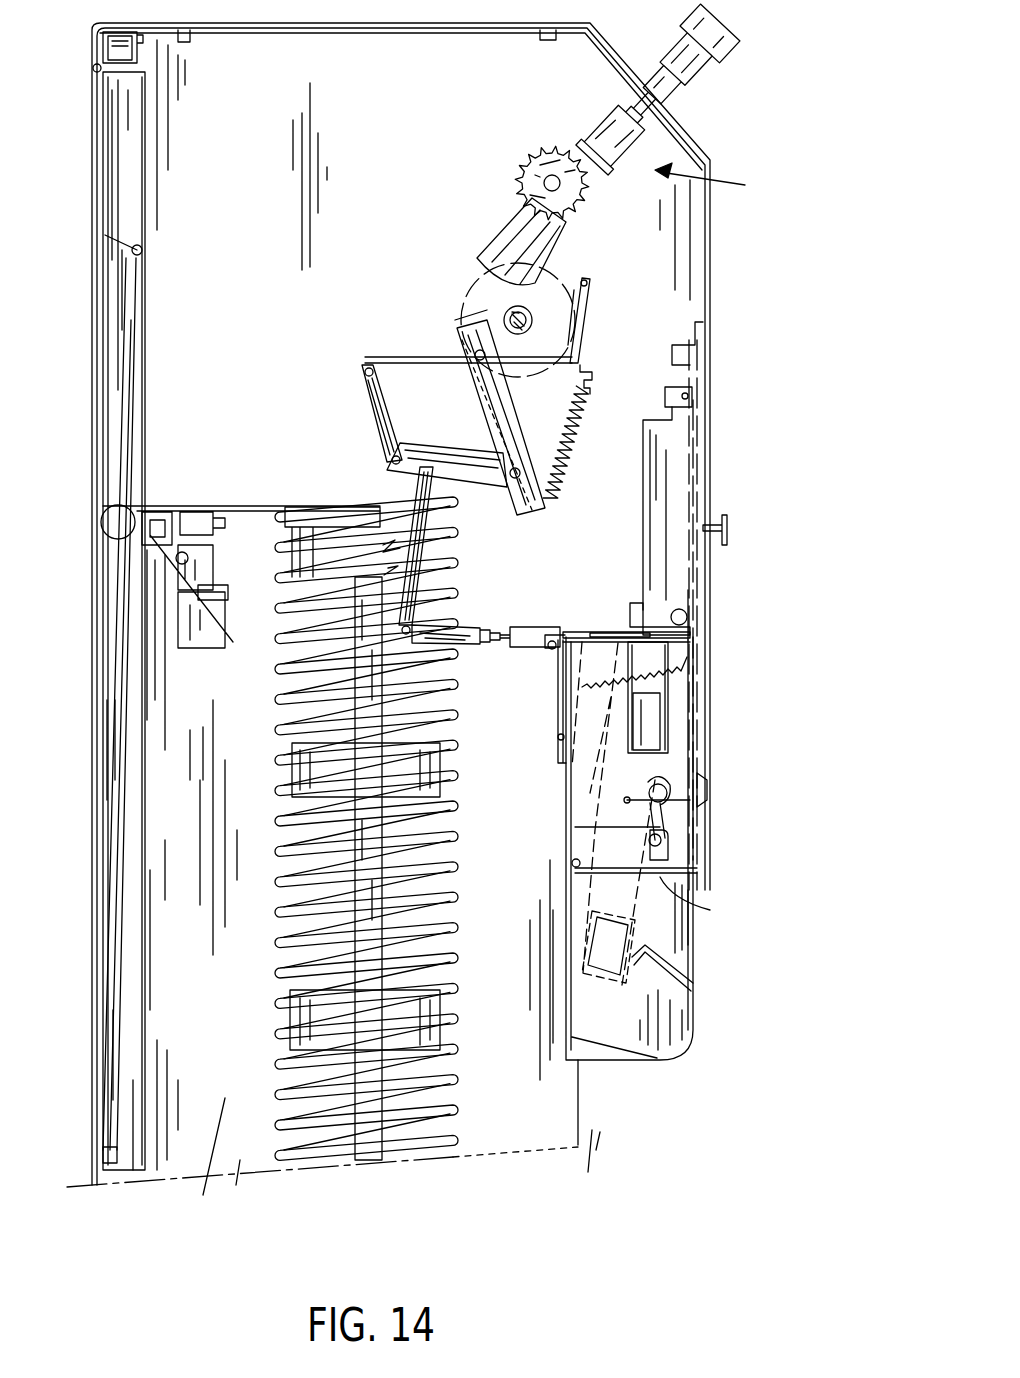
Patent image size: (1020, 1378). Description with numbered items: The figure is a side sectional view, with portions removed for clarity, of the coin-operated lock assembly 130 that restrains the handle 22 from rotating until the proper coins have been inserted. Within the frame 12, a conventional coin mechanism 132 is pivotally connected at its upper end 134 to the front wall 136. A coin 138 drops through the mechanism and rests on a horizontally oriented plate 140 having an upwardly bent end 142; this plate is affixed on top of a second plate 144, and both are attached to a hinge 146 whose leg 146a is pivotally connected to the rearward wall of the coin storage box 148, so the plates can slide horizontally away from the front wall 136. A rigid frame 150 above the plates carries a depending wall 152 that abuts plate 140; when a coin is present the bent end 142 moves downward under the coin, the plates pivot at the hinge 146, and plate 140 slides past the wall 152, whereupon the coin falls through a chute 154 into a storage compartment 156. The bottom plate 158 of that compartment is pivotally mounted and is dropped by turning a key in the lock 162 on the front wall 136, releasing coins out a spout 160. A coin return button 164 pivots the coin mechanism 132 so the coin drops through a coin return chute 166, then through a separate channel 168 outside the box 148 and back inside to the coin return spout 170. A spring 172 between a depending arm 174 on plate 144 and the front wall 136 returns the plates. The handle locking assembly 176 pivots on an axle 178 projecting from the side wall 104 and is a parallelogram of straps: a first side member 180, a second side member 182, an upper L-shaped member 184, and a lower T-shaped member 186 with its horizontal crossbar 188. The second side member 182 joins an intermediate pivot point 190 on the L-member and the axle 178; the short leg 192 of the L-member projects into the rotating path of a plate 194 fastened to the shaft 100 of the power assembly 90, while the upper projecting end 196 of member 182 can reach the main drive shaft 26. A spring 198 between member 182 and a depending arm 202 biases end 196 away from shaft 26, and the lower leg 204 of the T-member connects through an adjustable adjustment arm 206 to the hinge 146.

The frame 12 is at (710, 340).
The handle 22 is at (678, 92).
The main drive shaft 26 is at (506, 310).
The power assembly 90 is at (713, 181).
The shaft 100 is at (548, 176).
The side wall 104 is at (242, 186).
The coin-operated lock assembly 130 is at (650, 372).
The coin mechanism 132 is at (676, 497).
The upper end 134 is at (692, 397).
The front wall 136 is at (705, 420).
The coin 138 is at (700, 600).
The horizontally oriented plate 140 is at (690, 634).
The upwardly bent end 142 is at (690, 617).
The second plate 144 is at (612, 632).
The hinge 146 is at (557, 633).
The hinge leg 146a is at (558, 690).
The coin storage box 148 is at (565, 822).
The rigid frame 150 is at (638, 620).
The depending wall 152 is at (644, 624).
The chute 154 is at (680, 698).
The storage compartment 156 is at (680, 842).
The bottom plate 158 is at (665, 872).
The spout 160 is at (670, 940).
The lock 162 is at (707, 792).
The coin return button 164 is at (722, 532).
The coin return chute 166 is at (655, 683).
The separate channel 168 is at (650, 775).
The coin return spout 170 is at (657, 1010).
The spring 172 is at (563, 770).
The depending arm 174 is at (556, 738).
The handle locking assembly 176 is at (382, 480).
The axle 178 is at (500, 470).
The first side member 180 is at (372, 420).
The second side member 182 is at (505, 415).
The upper L-shaped member 184 is at (400, 357).
The lower T-shaped member 186 is at (425, 530).
The horizontal crossbar 188 is at (463, 470).
The intermediate pivot point 190 is at (475, 352).
The short leg 192 is at (585, 352).
The plate 194 is at (520, 228).
The upper projecting end 196 is at (481, 316).
The spring 198 is at (575, 445).
The depending arm 202 is at (585, 378).
The lower leg 204 is at (420, 560).
The adjustment arm 206 is at (450, 642).